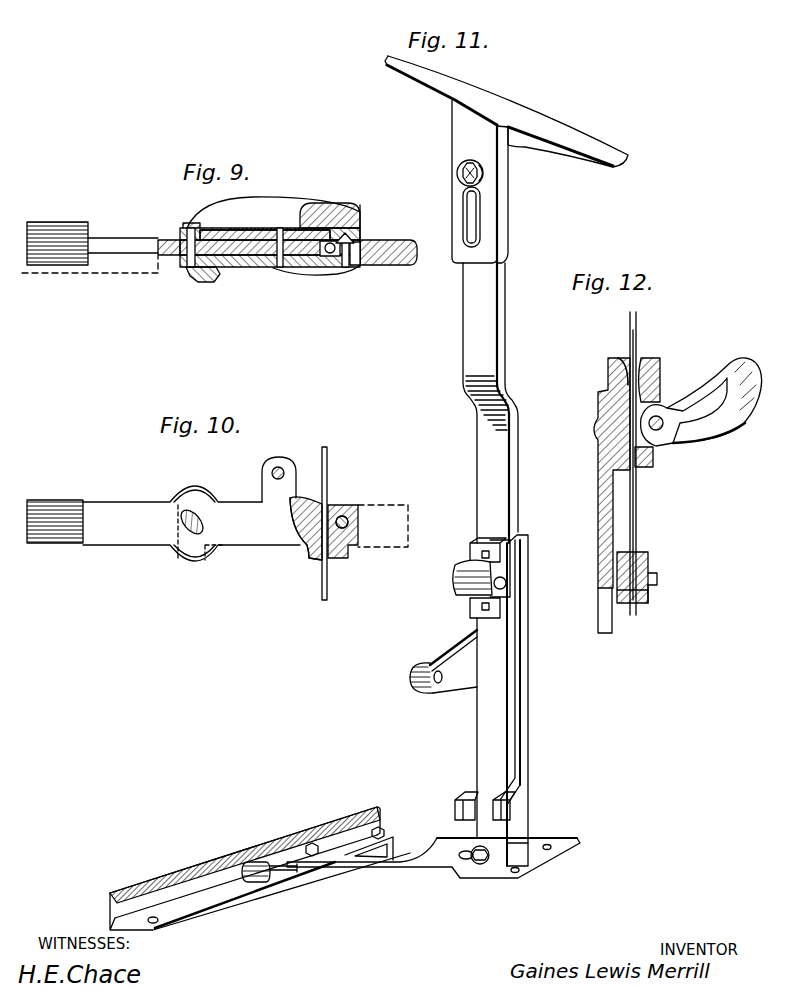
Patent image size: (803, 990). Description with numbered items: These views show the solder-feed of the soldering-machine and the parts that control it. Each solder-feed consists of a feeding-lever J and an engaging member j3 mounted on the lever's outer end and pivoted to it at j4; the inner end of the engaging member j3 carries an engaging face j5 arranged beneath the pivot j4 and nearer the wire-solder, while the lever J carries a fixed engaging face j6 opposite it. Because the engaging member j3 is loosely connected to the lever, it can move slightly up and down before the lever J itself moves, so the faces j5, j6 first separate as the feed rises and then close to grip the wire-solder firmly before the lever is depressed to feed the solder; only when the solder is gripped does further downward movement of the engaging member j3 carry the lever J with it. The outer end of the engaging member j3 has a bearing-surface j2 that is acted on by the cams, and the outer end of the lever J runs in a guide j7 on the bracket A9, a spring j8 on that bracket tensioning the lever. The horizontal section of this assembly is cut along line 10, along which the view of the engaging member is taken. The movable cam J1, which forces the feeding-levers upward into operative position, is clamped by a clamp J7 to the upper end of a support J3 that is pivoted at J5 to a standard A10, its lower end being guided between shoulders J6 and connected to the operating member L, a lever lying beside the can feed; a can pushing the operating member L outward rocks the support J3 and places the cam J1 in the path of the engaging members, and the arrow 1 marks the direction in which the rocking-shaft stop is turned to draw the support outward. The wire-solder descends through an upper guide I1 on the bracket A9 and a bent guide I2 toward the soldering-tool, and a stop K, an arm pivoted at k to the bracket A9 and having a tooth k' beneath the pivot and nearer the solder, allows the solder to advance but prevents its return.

In FIG. 9, the bearing-surface j2 is at (63, 223).
In FIG. 10, the bearing-surface j2 is at (53, 542).
In FIG. 9, the feeding-lever J is at (389, 243).
In FIG. 10, the feeding-lever J is at (250, 538).
In FIG. 12, the feeding-lever J is at (650, 554).
In FIG. 9, the engaging member j3 is at (300, 269).
In FIG. 10, the engaging member j3 is at (278, 539).
In FIG. 9, the pivot j4 is at (281, 228).
In FIG. 10, the pivot j4 is at (279, 471).
In FIG. 9, the engaging face j5 is at (330, 254).
In FIG. 10, the engaging face j5 is at (307, 523).
In FIG. 9, the fixed engaging face j6 is at (345, 268).
In FIG. 10, the fixed engaging face j6 is at (333, 518).
In FIG. 12, the fixed engaging face j6 is at (649, 591).
In FIG. 9, the guide j7 is at (203, 283).
In FIG. 9, the spring j8 is at (257, 229).
In FIG. 9, the bracket A9 is at (270, 205).
In FIG. 12, the bracket A9 is at (598, 502).
In FIG. 9, the section line 10 10 is at (364, 266).
In FIG. 11, the cam J1 is at (513, 118).
In FIG. 11, the movable support J3 is at (489, 291).
In FIG. 11, the pivot J5 is at (507, 583).
In FIG. 11, the shoulders J6 is at (507, 797).
In FIG. 11, the clamp J7 is at (457, 172).
In FIG. 11, the standard A10 is at (523, 684).
In FIG. 11, the operating member L is at (284, 840).
In FIG. 11, the arrow 1 is at (158, 924).
In FIG. 11, the upper guide I1 is at (437, 862).
In FIG. 12, the upper guide I1 is at (661, 376).
In FIG. 11, the bent guide I2 is at (480, 864).
In FIG. 12, the pivot k is at (670, 409).
In FIG. 12, the stop K is at (696, 440).
In FIG. 12, the tooth k' is at (660, 443).